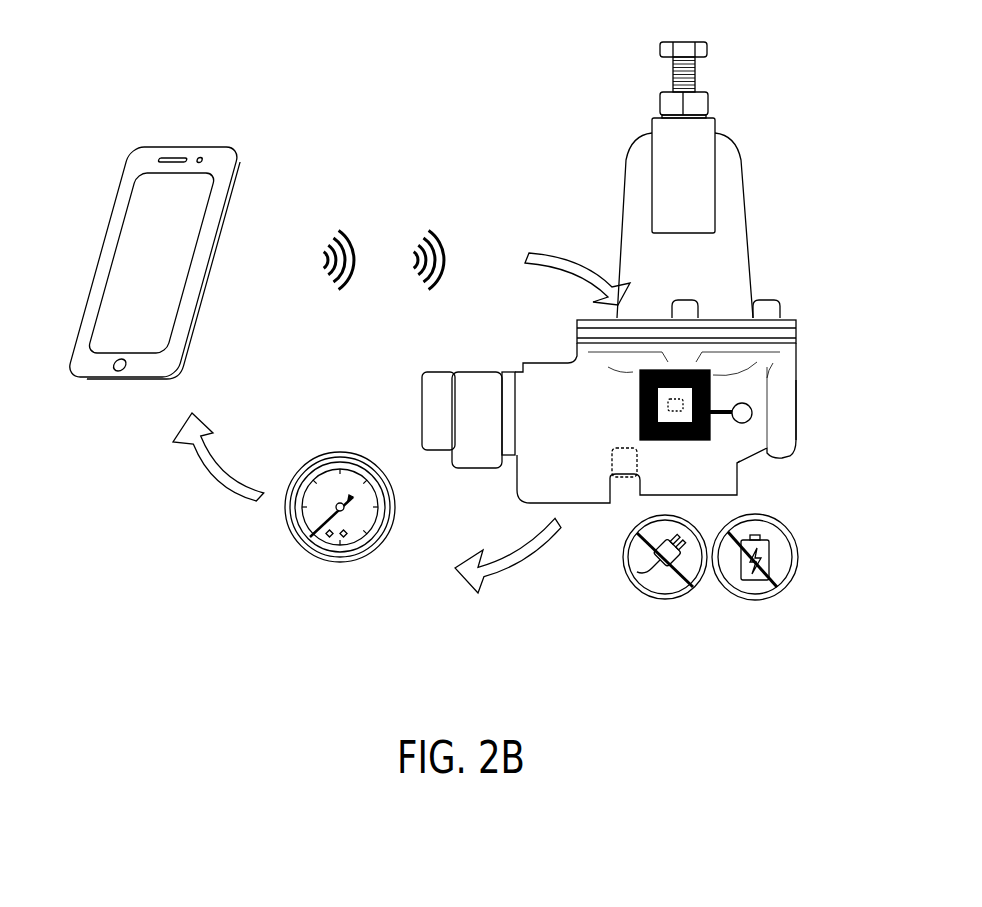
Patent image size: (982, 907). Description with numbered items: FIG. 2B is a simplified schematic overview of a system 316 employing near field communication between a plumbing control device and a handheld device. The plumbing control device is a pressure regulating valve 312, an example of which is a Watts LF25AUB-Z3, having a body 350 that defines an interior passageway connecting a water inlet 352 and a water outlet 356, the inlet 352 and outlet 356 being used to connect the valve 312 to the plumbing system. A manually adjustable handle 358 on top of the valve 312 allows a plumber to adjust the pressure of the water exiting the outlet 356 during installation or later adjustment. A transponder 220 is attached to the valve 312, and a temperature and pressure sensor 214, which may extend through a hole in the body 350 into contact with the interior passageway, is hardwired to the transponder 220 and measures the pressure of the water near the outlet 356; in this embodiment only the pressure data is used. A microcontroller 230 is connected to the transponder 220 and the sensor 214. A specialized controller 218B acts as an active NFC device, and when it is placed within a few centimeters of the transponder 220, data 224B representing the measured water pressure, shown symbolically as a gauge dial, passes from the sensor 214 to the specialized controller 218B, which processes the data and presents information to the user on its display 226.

The specialized controller 218B is at (228, 158).
The display 226 is at (122, 260).
The system 316 is at (460, 141).
The manually adjustable handle 358 is at (695, 63).
The pressure regulating valve 312 is at (769, 225).
The body 350 is at (545, 363).
The water inlet 352 is at (430, 412).
The transponder 220 is at (712, 402).
The water outlet 356 is at (803, 410).
The temperature and pressure sensor 214 is at (753, 420).
The microcontroller 230 is at (713, 430).
The data 224B is at (279, 555).